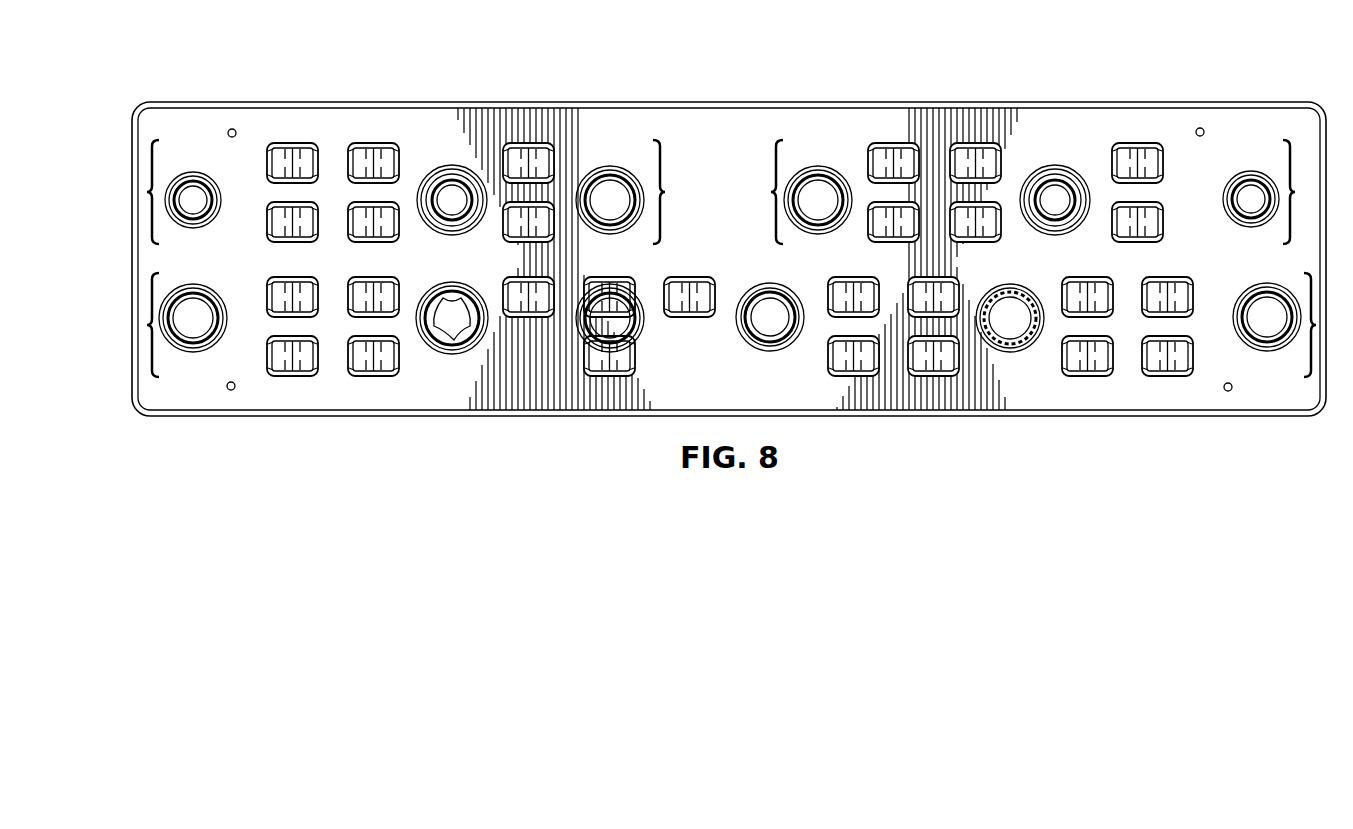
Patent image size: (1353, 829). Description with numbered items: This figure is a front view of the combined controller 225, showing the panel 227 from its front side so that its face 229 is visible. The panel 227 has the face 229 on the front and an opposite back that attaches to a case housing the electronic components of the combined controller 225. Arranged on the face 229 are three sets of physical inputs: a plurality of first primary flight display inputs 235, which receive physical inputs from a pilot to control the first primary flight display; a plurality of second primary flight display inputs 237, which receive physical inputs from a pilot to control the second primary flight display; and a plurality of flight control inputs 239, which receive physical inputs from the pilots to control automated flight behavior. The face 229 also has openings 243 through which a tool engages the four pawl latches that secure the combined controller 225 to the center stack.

The combined controller 225 is at (508, 76).
The panel 227 is at (878, 100).
The face 229 is at (737, 128).
The first primary flight display inputs 235 is at (147, 192).
The second primary flight display inputs 237 is at (771, 192).
The flight control inputs 239 is at (147, 325).
The openings 243 is at (233, 129).